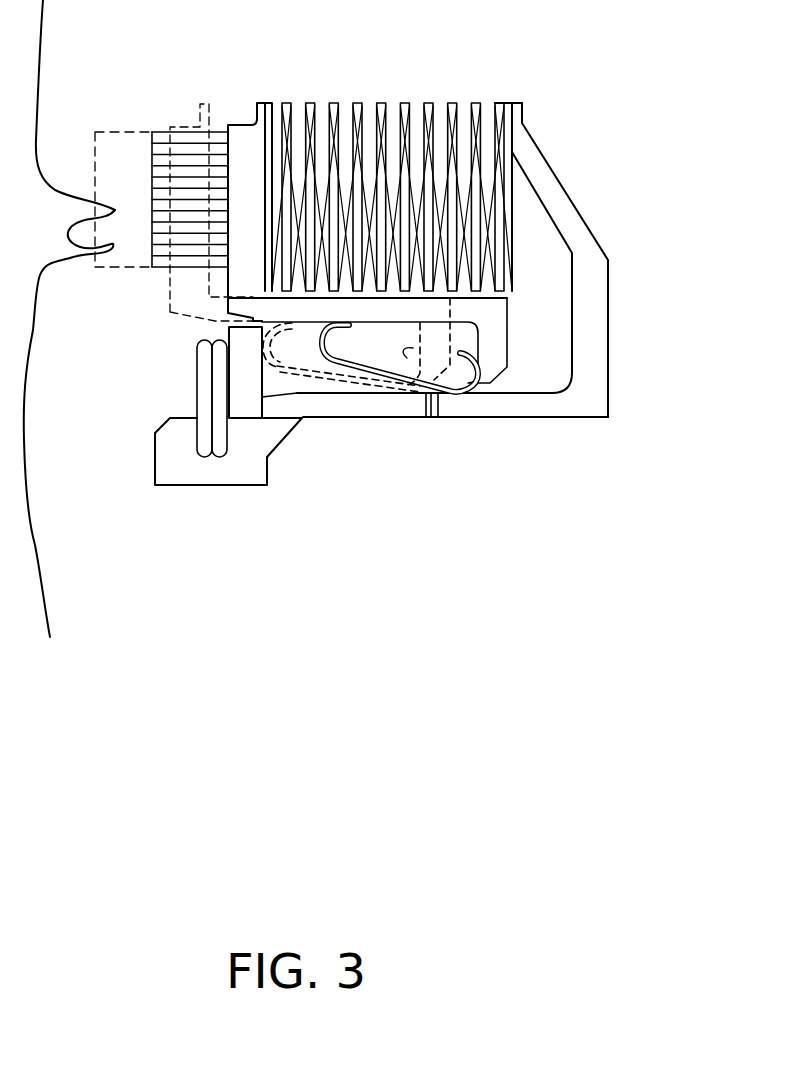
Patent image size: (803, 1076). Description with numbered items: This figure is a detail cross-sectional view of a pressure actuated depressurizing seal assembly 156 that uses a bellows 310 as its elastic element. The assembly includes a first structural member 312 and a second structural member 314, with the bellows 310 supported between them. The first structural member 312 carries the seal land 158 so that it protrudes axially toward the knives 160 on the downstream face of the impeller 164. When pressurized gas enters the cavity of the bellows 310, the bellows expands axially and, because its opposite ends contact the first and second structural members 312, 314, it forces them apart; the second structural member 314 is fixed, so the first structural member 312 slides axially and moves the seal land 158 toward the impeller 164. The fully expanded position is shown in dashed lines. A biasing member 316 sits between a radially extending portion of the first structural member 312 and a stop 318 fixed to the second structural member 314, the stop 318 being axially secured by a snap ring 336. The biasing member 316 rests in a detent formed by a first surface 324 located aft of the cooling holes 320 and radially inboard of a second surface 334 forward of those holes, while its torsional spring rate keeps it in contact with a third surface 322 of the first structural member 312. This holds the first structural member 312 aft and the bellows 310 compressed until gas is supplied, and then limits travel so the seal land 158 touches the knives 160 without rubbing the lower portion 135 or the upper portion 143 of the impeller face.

The lower portion of the downstream face of the impeller 135 is at (38, 565).
The upper portion of the downstream face of the impeller 143 is at (38, 137).
The depressurizing seal assembly 156 is at (565, 178).
The seal land 158 is at (160, 128).
The knives 160 is at (78, 257).
The impeller 164 is at (35, 442).
The bellows 310 is at (357, 103).
The first structural member 312 is at (245, 128).
The second structural member 314 is at (580, 418).
The biasing member 316 is at (368, 387).
The stop 318 is at (248, 400).
The cooling holes 320 is at (432, 423).
The third surface 322 is at (297, 330).
The first surface 324 is at (517, 383).
The second surface 334 is at (328, 385).
The snap ring 336 is at (197, 395).